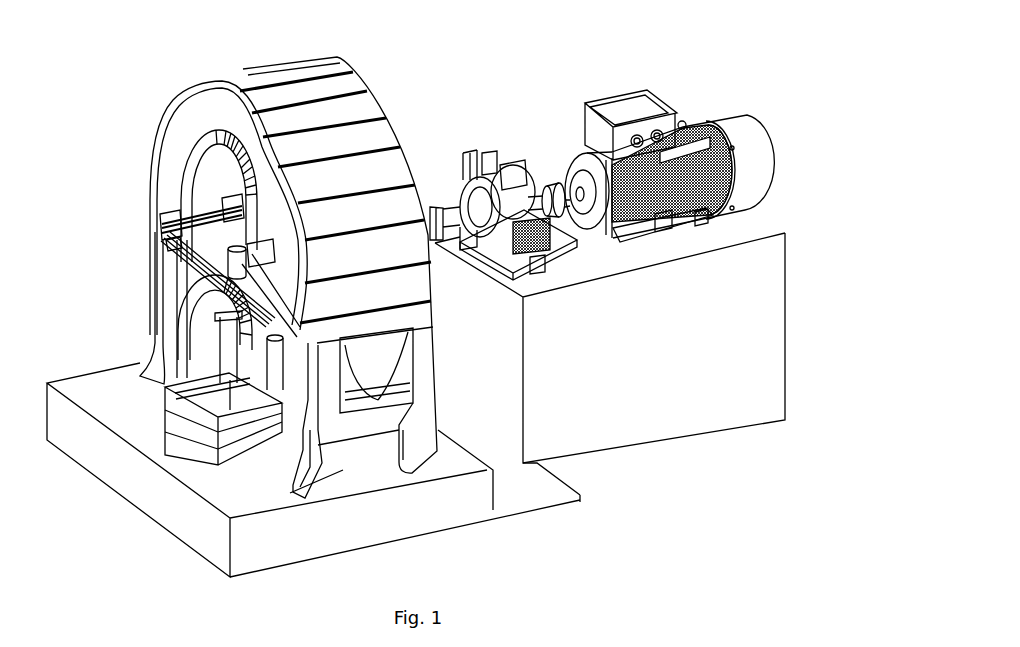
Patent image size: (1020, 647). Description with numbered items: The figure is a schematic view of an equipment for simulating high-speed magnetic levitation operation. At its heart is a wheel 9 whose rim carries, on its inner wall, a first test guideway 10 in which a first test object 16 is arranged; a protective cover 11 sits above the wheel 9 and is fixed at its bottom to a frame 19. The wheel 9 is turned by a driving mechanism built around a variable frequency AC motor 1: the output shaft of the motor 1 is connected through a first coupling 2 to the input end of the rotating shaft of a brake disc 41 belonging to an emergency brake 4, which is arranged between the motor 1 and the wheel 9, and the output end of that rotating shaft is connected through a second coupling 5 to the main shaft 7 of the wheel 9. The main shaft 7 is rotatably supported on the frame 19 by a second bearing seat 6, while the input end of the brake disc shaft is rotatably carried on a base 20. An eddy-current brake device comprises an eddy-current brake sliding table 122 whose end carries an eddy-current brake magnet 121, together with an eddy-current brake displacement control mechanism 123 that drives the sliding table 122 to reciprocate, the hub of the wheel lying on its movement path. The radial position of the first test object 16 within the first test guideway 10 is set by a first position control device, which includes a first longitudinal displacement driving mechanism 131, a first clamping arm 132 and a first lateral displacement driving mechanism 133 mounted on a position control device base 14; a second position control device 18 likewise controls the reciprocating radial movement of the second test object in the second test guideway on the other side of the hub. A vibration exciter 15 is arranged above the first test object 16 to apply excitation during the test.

The variable frequency AC motor 1 is at (691, 153).
The first coupling 2 is at (558, 197).
The emergency brake 4 is at (517, 172).
The brake disc 41 is at (485, 158).
The second coupling 5 is at (423, 212).
The second bearing seat 6 is at (172, 224).
The main shaft 7 is at (272, 243).
The wheel 9 is at (260, 200).
The first test guideway 10 is at (222, 157).
The protective cover 11 is at (263, 78).
The eddy-current brake magnet 121 is at (242, 248).
The eddy-current brake sliding table 122 is at (230, 215).
The eddy-current brake displacement control mechanism 123 is at (196, 212).
The first longitudinal displacement driving mechanism 131 is at (232, 313).
The first clamping arm 132 is at (268, 352).
The first lateral displacement driving mechanism 133 is at (158, 376).
The position control device base 14 is at (205, 427).
The vibration exciter 15 is at (215, 420).
The first test object 16 is at (245, 390).
The second position control device 18 is at (380, 348).
The frame 19 is at (326, 408).
The base 20 is at (692, 400).